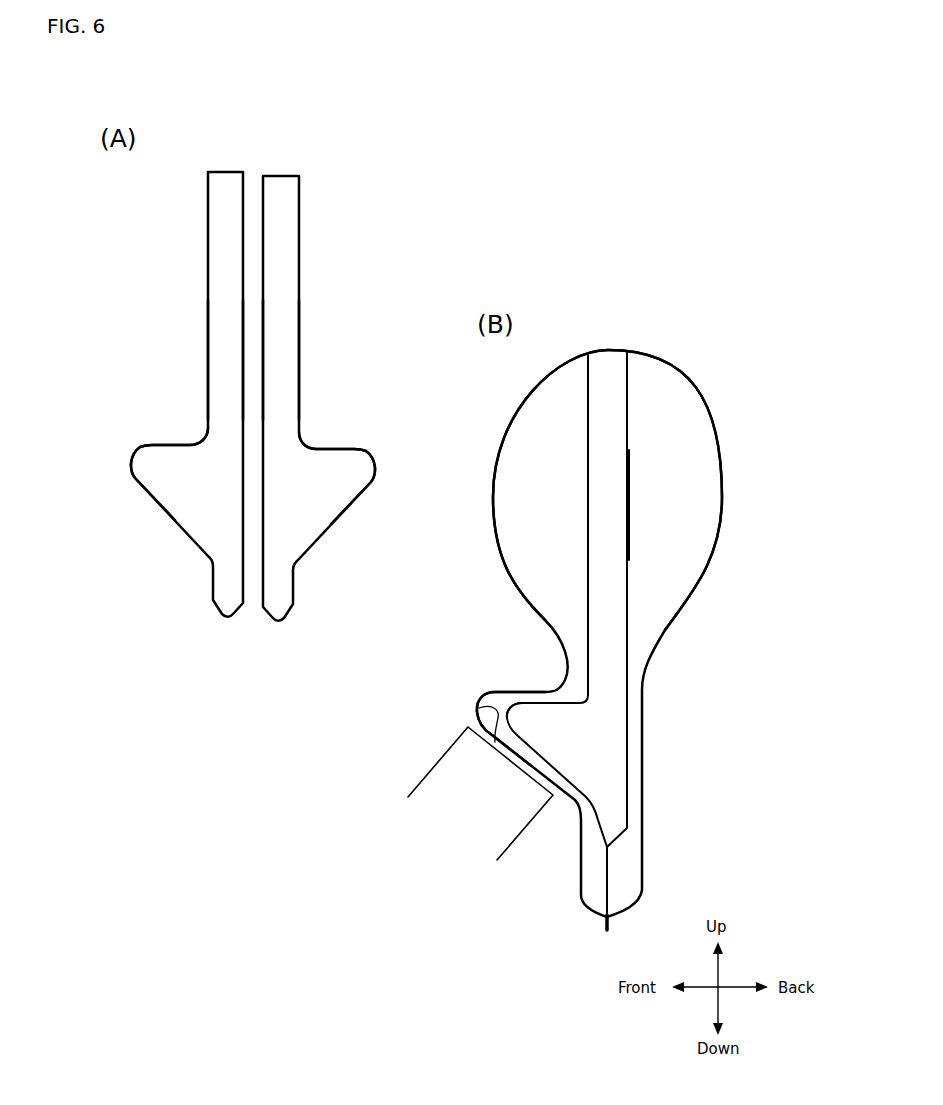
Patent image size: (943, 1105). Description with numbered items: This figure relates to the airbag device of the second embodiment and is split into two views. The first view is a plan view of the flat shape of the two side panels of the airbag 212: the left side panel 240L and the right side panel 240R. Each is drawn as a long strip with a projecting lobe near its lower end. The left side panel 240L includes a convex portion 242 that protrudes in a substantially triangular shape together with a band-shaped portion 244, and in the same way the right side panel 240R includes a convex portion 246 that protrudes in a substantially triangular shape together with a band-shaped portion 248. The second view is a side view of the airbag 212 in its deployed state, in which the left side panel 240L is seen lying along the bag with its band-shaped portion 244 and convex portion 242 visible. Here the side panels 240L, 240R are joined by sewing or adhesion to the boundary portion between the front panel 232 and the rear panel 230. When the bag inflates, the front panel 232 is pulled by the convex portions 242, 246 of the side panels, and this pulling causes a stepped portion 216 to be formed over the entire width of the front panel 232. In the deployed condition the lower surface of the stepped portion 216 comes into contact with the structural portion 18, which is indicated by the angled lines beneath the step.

The structural portion 18 is at (477, 708).
The airbag 212 is at (665, 350).
The stepped portion 216 is at (489, 700).
The rear panel 230 is at (702, 452).
The front panel 232 is at (505, 537).
The left side panel 240L is at (214, 166).
The right side panel 240R is at (308, 172).
The convex portion 242 is at (155, 452).
The band-shaped portion 244 is at (210, 266).
The convex portion 246 is at (363, 460).
The band-shaped portion 248 is at (290, 251).